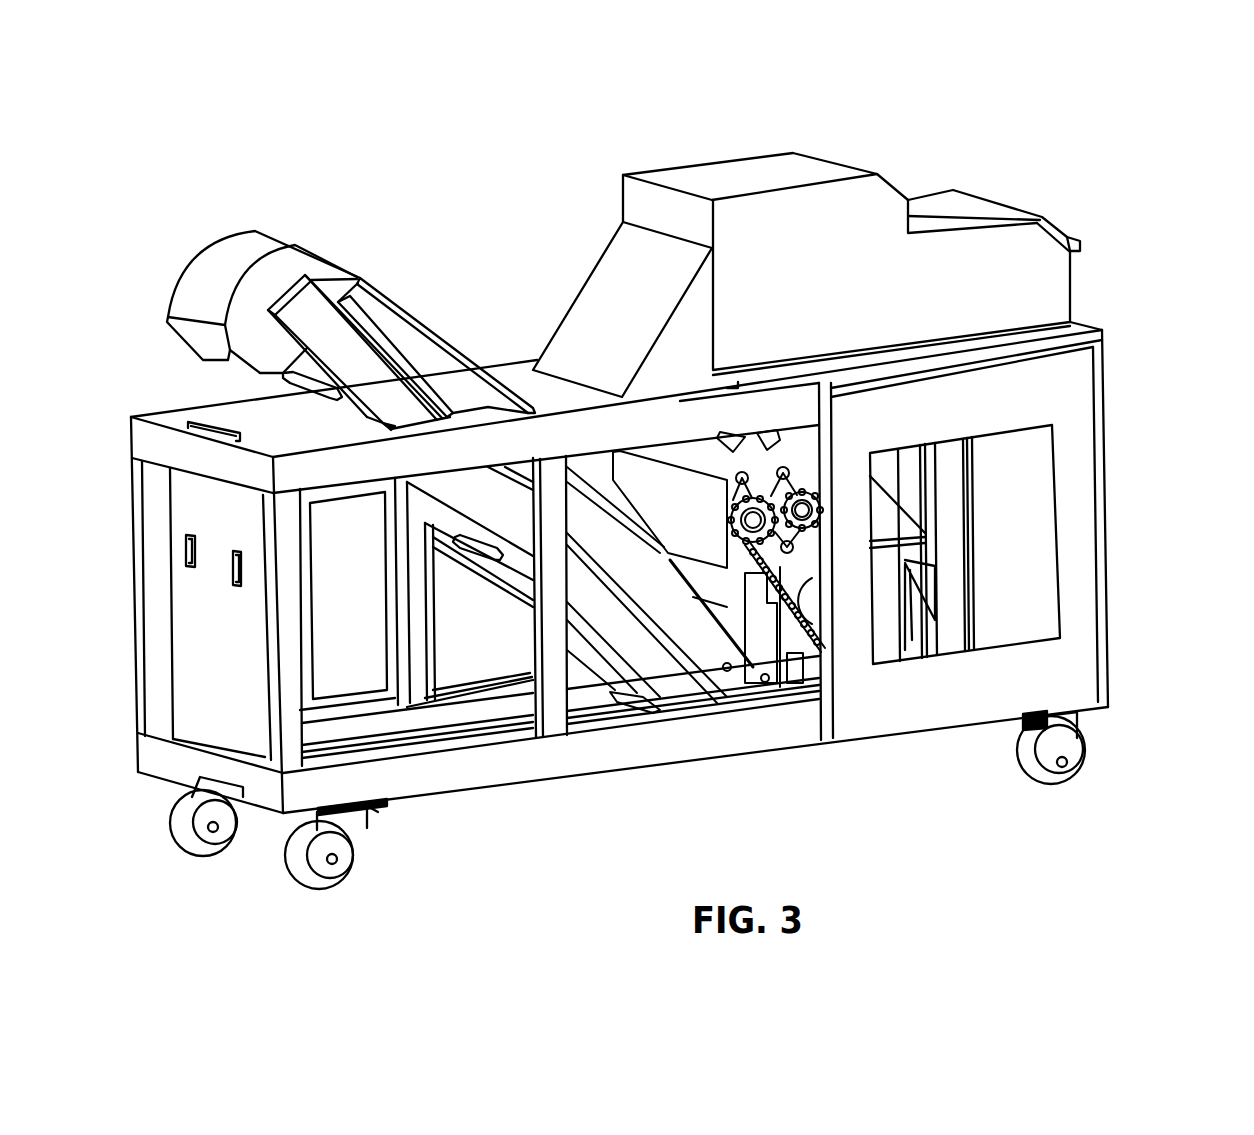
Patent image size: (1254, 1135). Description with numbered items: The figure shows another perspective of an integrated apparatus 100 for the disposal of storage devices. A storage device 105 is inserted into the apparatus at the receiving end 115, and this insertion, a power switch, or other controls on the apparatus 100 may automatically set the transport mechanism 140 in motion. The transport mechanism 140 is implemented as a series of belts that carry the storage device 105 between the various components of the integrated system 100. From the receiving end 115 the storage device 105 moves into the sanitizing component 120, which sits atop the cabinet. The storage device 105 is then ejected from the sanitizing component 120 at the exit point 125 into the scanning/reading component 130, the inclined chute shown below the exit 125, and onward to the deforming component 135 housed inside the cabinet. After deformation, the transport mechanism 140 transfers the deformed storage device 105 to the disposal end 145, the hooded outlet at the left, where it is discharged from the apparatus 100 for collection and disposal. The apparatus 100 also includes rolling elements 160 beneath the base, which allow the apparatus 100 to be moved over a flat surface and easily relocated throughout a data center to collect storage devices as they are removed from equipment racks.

The integrated system 100 is at (598, 90).
The storage device 105 is at (1084, 220).
The receiving end 115 is at (936, 200).
The sanitizing component 120 is at (770, 165).
The exit point 125 is at (672, 230).
The scanning/reading component 130 is at (607, 293).
The deforming component 135 is at (806, 448).
The transport mechanism 140 is at (423, 345).
The disposal end 145 is at (240, 258).
The rolling elements 160 is at (1102, 745).